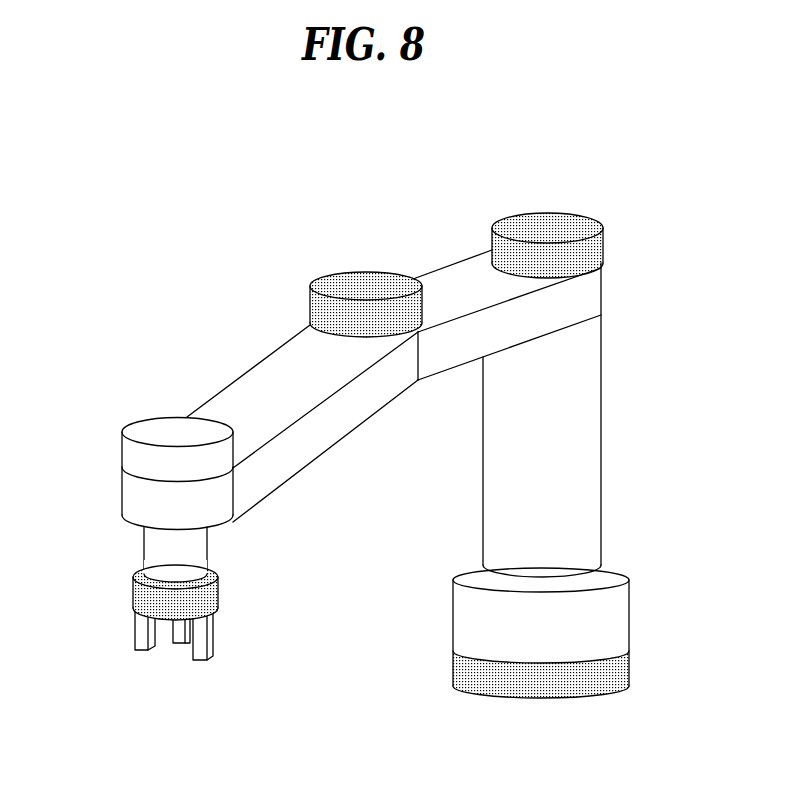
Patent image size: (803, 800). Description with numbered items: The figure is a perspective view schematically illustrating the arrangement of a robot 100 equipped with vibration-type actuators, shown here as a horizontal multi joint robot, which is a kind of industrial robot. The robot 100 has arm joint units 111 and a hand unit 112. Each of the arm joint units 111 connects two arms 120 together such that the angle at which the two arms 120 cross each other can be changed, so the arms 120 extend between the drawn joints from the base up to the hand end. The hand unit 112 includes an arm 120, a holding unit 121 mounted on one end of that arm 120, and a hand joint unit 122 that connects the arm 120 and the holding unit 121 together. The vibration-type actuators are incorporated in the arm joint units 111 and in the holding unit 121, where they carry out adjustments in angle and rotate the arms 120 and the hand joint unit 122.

The robot 100 is at (203, 245).
The arm joint unit 111 is at (588, 252).
The hand unit 112 is at (258, 606).
The arm 120 is at (454, 276).
The holding unit 121 is at (138, 636).
The hand joint unit 122 is at (140, 600).